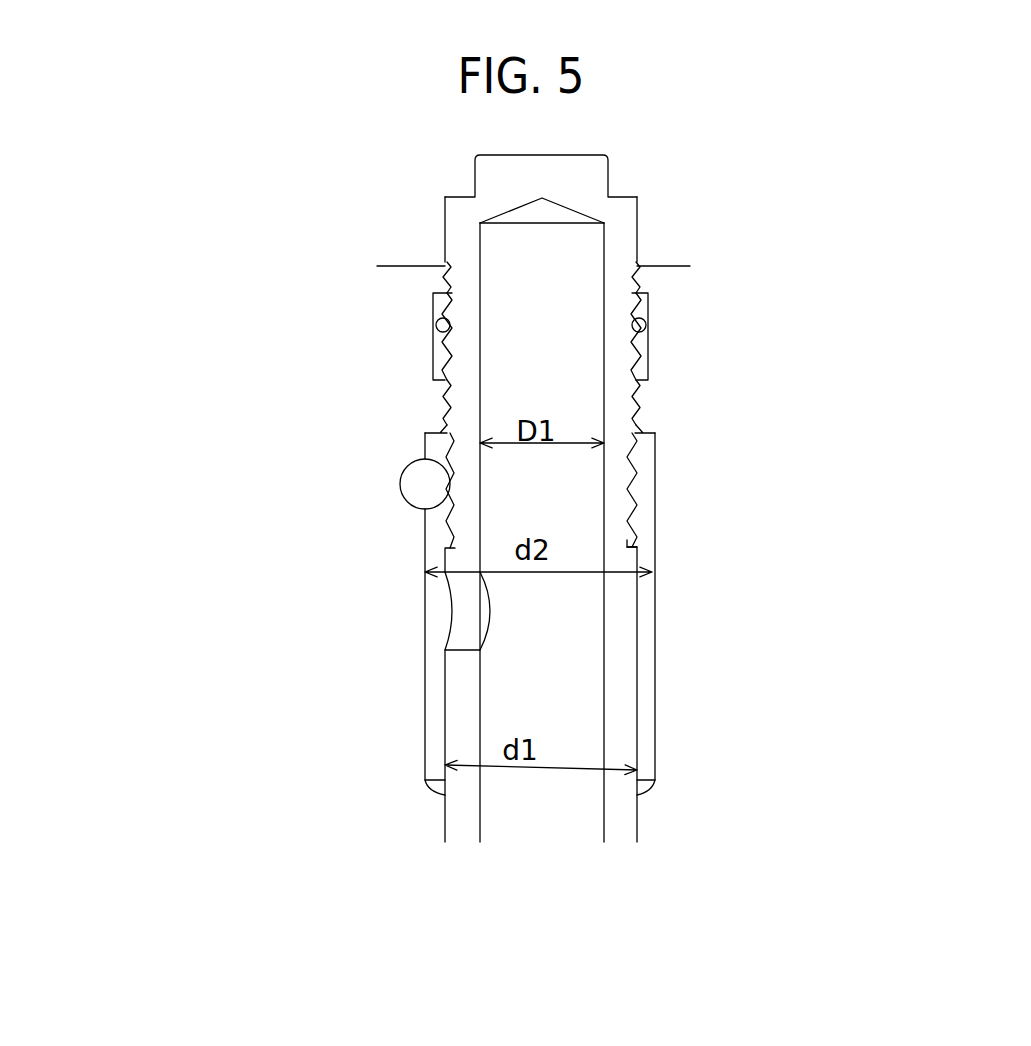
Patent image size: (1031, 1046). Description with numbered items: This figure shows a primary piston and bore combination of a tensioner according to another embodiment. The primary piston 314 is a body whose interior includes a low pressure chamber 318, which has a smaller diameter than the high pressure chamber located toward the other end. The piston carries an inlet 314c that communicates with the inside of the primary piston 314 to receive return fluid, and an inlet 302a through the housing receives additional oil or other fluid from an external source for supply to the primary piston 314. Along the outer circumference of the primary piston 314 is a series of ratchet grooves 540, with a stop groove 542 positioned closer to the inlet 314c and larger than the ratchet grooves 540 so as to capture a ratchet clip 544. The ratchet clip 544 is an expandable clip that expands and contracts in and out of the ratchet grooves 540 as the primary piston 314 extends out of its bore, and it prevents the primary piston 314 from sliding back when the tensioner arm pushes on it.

The primary piston 314 is at (646, 196).
The low pressure chamber 318 is at (616, 378).
The ratchet clip 544 is at (654, 318).
The ratchet grooves 540 is at (649, 472).
The stop groove 542 is at (648, 546).
The inlet 314c is at (505, 626).
The inlet 302a is at (389, 474).